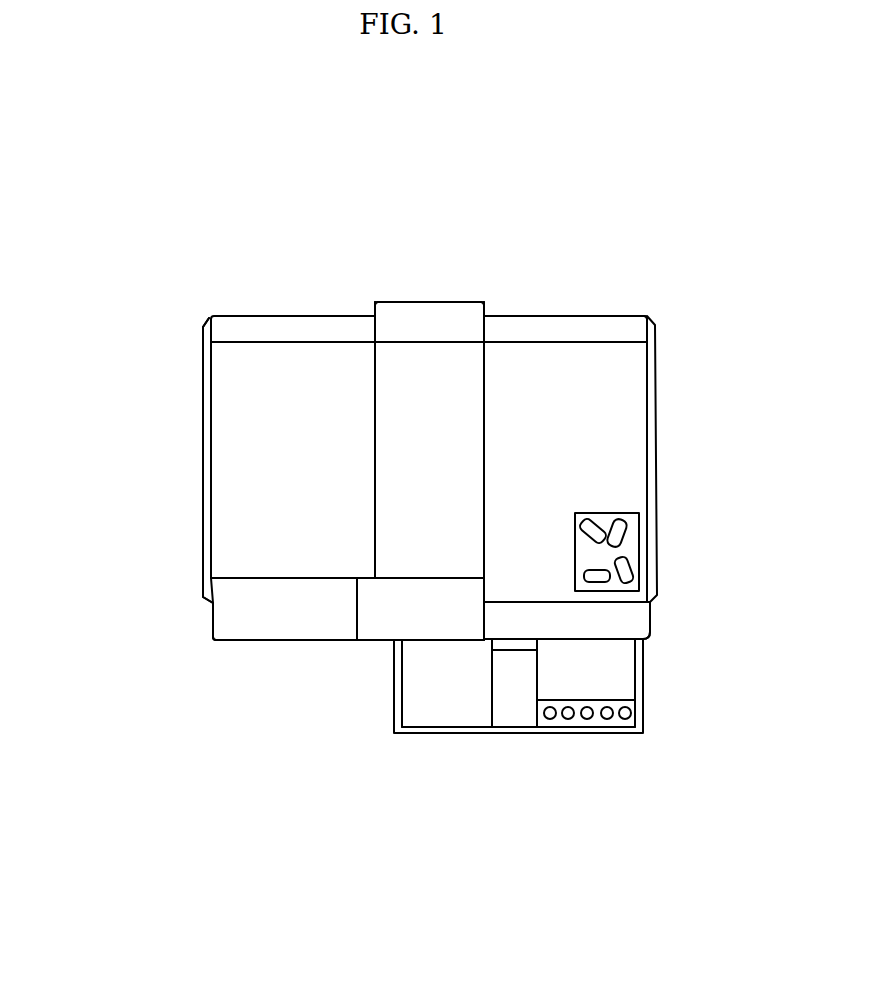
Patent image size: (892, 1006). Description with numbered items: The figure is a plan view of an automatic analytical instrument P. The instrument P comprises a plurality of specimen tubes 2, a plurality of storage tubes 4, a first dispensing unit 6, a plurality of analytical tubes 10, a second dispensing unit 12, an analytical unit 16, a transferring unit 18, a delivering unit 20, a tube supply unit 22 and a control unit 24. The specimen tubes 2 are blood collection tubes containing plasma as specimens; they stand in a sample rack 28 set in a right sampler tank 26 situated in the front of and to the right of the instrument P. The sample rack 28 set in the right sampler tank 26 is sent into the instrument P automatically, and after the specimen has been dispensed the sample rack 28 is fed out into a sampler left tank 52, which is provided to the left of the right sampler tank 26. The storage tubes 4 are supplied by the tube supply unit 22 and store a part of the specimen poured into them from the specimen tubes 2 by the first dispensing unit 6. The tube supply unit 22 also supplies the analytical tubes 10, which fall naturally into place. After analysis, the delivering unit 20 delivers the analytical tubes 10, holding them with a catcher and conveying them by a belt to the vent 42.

The automatic analytical instrument P is at (214, 212).
The specimen tubes 2 is at (587, 722).
The storage tubes 4 is at (598, 523).
The first dispensing unit 6 is at (628, 617).
The analytical tubes 10 is at (610, 575).
The second dispensing unit 12 is at (537, 367).
The analytical unit 16 is at (424, 367).
The transferring unit 18 is at (400, 494).
The delivering unit 20 is at (240, 389).
The tube supply unit 22 is at (607, 558).
The control unit 24 is at (602, 367).
The right sampler tank 26 is at (620, 680).
The sample rack 28 is at (637, 733).
The vent 42 is at (203, 442).
The sampler left tank 52 is at (446, 683).